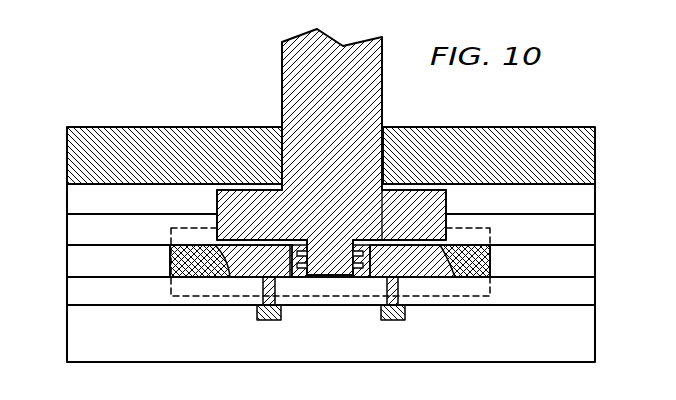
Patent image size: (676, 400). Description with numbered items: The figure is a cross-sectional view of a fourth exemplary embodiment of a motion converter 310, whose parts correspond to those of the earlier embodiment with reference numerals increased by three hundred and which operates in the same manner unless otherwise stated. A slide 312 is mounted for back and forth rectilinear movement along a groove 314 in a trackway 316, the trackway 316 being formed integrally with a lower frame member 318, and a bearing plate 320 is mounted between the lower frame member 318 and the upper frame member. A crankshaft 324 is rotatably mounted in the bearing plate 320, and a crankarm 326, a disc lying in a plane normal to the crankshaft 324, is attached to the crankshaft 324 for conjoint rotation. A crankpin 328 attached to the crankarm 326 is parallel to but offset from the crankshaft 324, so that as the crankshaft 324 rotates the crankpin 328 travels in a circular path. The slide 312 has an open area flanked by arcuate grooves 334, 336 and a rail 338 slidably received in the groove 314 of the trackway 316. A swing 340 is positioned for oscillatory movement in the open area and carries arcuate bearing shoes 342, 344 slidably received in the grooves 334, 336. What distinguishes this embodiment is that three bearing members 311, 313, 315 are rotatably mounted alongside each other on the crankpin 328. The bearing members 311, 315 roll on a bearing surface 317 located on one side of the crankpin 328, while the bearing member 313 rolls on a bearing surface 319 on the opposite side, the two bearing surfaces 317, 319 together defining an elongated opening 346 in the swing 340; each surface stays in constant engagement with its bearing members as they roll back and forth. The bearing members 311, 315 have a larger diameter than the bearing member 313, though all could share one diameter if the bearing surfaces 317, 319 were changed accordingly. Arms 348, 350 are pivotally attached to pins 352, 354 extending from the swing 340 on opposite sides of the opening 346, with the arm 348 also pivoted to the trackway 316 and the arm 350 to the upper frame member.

The motion converter 310 is at (87, 102).
The bearing member 311 is at (296, 243).
The slide 312 is at (493, 255).
The bearing member 313 is at (372, 237).
The groove 314 is at (595, 255).
The bearing member 315 is at (362, 277).
The trackway 316 is at (67, 290).
The bearing surface 317 is at (410, 238).
The lower frame member 318 is at (590, 322).
The bearing surface 319 is at (289, 277).
The bearing plate 320 is at (595, 160).
The crankshaft 324 is at (282, 92).
The crankarm 326 is at (407, 238).
The crankpin 328 is at (330, 277).
The arcuate groove 334 is at (200, 254).
The arcuate groove 336 is at (455, 255).
The rail 338 is at (171, 229).
The swing 340 is at (242, 278).
The arcuate bearing shoe 342 is at (215, 278).
The arcuate bearing shoe 344 is at (455, 276).
The elongated opening 346 is at (301, 284).
The arm 348 is at (266, 320).
The arm 350 is at (400, 318).
The pin 352 is at (262, 290).
The pin 354 is at (400, 280).